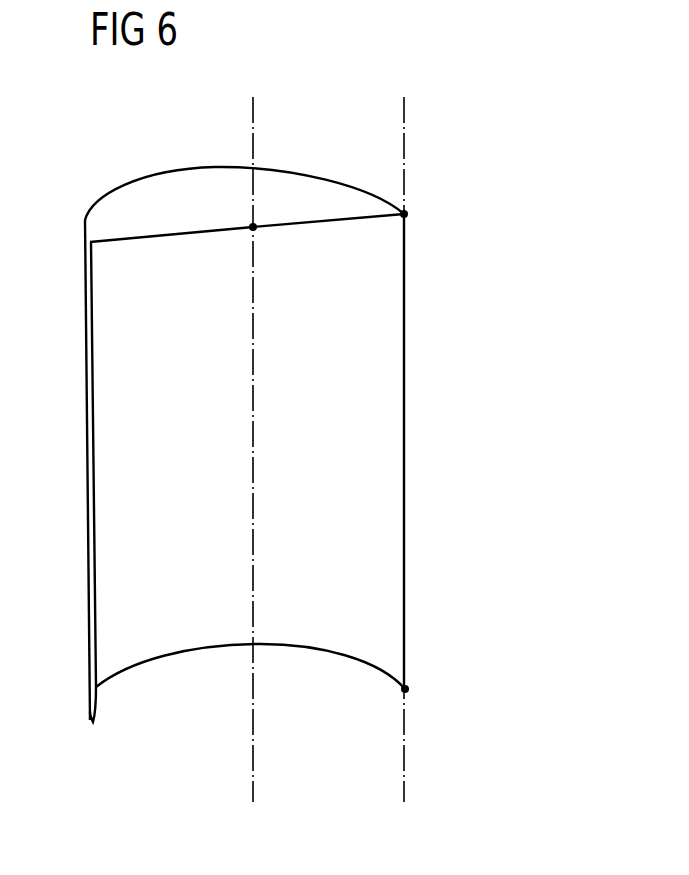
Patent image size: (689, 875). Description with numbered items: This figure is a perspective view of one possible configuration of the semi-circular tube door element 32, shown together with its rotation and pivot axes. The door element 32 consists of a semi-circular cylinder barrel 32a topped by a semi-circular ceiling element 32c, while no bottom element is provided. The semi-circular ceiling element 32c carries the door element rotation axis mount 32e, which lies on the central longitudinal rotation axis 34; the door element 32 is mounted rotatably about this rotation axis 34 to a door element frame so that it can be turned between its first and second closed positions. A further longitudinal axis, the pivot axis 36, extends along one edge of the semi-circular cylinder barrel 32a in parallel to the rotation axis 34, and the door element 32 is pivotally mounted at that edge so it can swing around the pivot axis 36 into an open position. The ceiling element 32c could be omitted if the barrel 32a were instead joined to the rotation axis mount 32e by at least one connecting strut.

The semi-circular tube door element 32 is at (309, 416).
The semi-circular cylinder barrel 32a is at (393, 468).
The semi-circular ceiling element 32c is at (182, 187).
The door element rotation axis mount 32e is at (250, 230).
The central rotation axis 34 is at (255, 788).
The pivot axis 36 is at (407, 788).